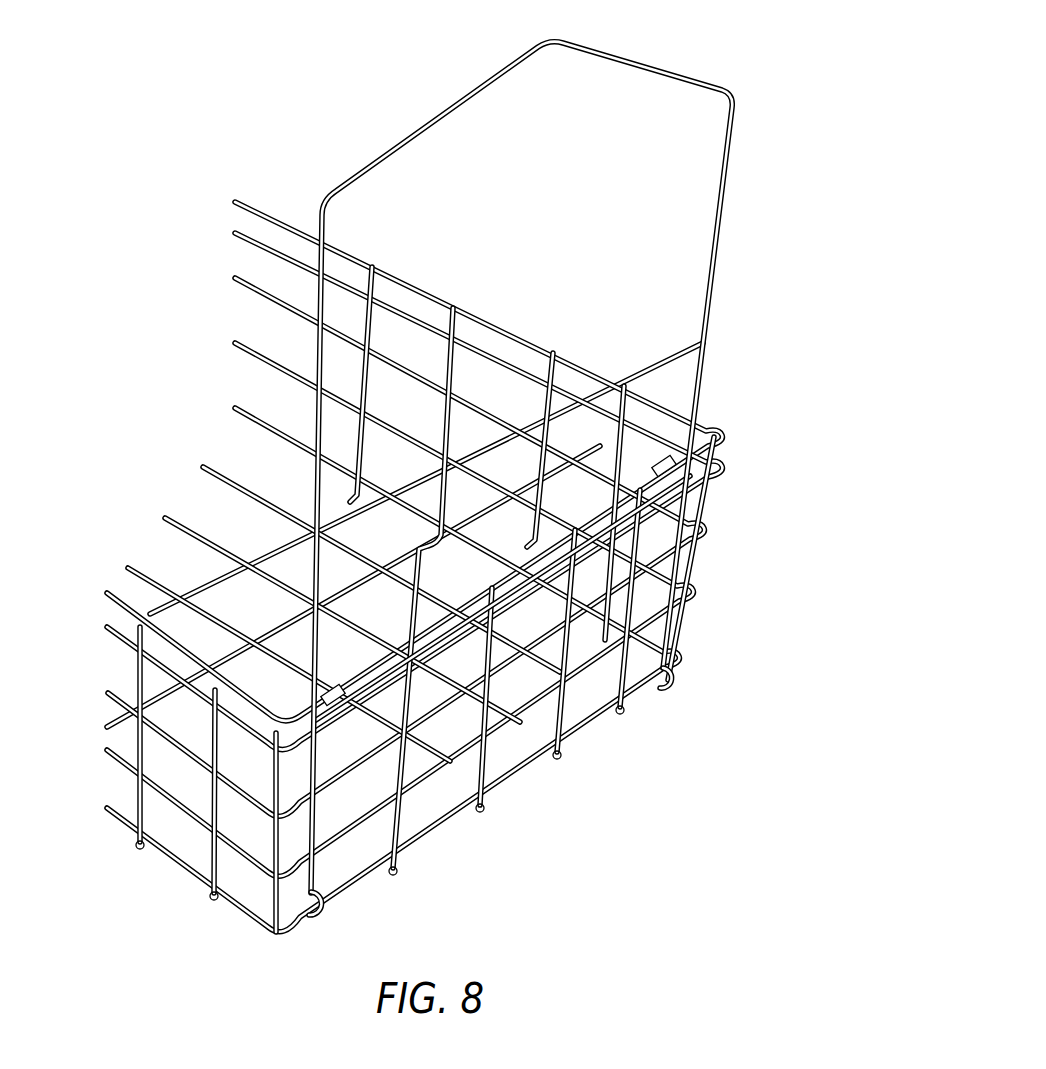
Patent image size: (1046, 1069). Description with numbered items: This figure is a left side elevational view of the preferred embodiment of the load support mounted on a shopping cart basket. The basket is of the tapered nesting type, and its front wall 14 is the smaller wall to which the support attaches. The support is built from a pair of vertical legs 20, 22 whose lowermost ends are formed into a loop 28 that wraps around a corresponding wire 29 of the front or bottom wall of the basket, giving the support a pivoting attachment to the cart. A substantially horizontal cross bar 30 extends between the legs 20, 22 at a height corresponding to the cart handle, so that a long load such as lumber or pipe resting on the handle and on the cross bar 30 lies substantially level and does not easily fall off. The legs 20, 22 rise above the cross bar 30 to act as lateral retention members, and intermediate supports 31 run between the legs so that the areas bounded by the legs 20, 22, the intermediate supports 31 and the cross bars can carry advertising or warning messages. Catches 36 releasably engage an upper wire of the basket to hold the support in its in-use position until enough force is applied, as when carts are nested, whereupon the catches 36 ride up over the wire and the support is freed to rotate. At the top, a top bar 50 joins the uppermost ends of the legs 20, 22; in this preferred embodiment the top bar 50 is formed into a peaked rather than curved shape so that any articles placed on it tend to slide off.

The front wall 14 is at (428, 571).
The vertical leg 20 is at (425, 484).
The vertical leg 22 is at (718, 216).
The loop 28 is at (670, 682).
The wire 29 is at (683, 655).
The cross bar 30 is at (660, 350).
The intermediate support 31 is at (640, 437).
The catch 36 is at (680, 470).
The top bar 50 is at (630, 60).